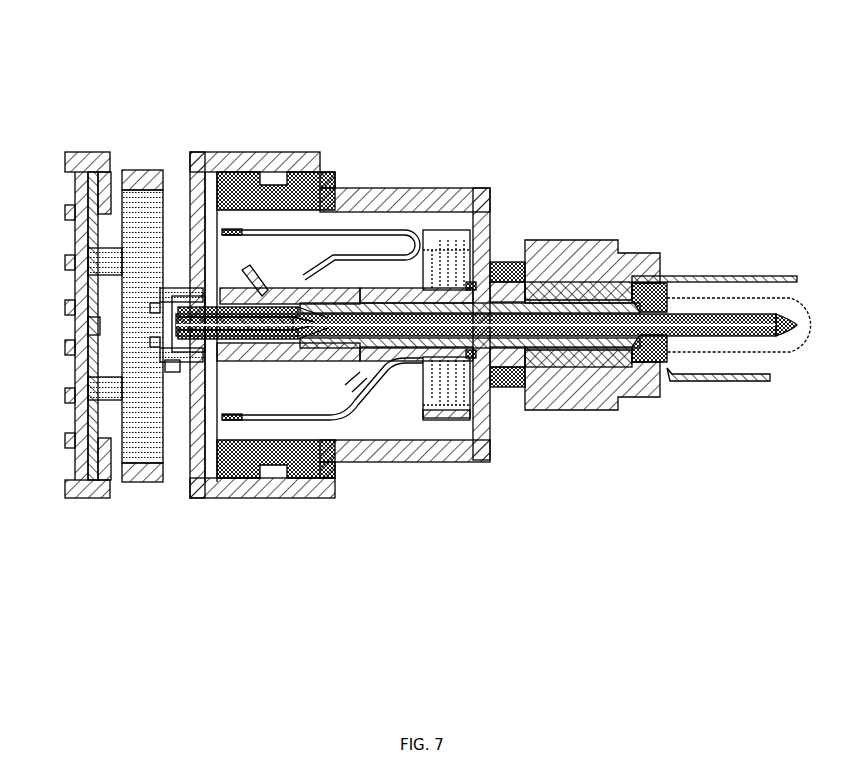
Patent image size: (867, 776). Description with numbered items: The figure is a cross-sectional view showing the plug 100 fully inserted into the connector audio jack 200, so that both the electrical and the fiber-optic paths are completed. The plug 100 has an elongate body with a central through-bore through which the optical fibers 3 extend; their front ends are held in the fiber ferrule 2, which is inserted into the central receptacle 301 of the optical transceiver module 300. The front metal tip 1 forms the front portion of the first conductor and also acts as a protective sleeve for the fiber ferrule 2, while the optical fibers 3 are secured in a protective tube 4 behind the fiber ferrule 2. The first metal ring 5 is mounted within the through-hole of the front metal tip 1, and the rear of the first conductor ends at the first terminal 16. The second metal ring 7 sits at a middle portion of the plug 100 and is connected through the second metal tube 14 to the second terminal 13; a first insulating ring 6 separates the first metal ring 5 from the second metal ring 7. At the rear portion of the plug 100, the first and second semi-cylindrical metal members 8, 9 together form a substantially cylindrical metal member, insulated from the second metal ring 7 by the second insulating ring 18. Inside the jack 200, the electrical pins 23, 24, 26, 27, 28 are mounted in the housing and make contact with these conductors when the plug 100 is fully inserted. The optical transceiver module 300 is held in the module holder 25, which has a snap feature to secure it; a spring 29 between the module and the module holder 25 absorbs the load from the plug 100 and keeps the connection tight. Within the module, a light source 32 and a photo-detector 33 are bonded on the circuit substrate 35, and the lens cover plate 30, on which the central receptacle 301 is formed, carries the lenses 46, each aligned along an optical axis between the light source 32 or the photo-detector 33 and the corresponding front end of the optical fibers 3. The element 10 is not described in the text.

The front metal tip 1 is at (212, 465).
The fiber ferrule 2 is at (200, 432).
The optical fibers 3 is at (305, 300).
The protective tube 4 is at (345, 375).
The first metal ring 5 is at (330, 230).
The first insulating ring 6 is at (383, 210).
The second metal ring 7 is at (448, 232).
The first semi-cylindrical metal member 8 is at (515, 262).
The second semi-cylindrical metal member 9 is at (508, 402).
The nut body 10 is at (590, 242).
The second terminal 13 is at (715, 383).
The second metal tube 14 is at (530, 264).
The first terminal 16 is at (750, 276).
The second insulating ring 18 is at (497, 184).
The electrical pin 23 is at (462, 418).
The electrical pin 24 is at (478, 182).
The module holder 25 is at (255, 283).
The electrical pin 26 is at (336, 472).
The electrical pin 27 is at (258, 498).
The electrical pin 28 is at (292, 156).
The spring 29 is at (66, 234).
The lens cover plate 30 is at (100, 152).
The light source 32 is at (142, 314).
The photo-detector 33 is at (142, 342).
The circuit substrate 35 is at (72, 186).
The lens 46 is at (150, 311).
The plug 100 is at (606, 187).
The connector audio jack 200 is at (441, 162).
The optical transceiver module 300 is at (162, 100).
The central receptacle 301 is at (175, 370).